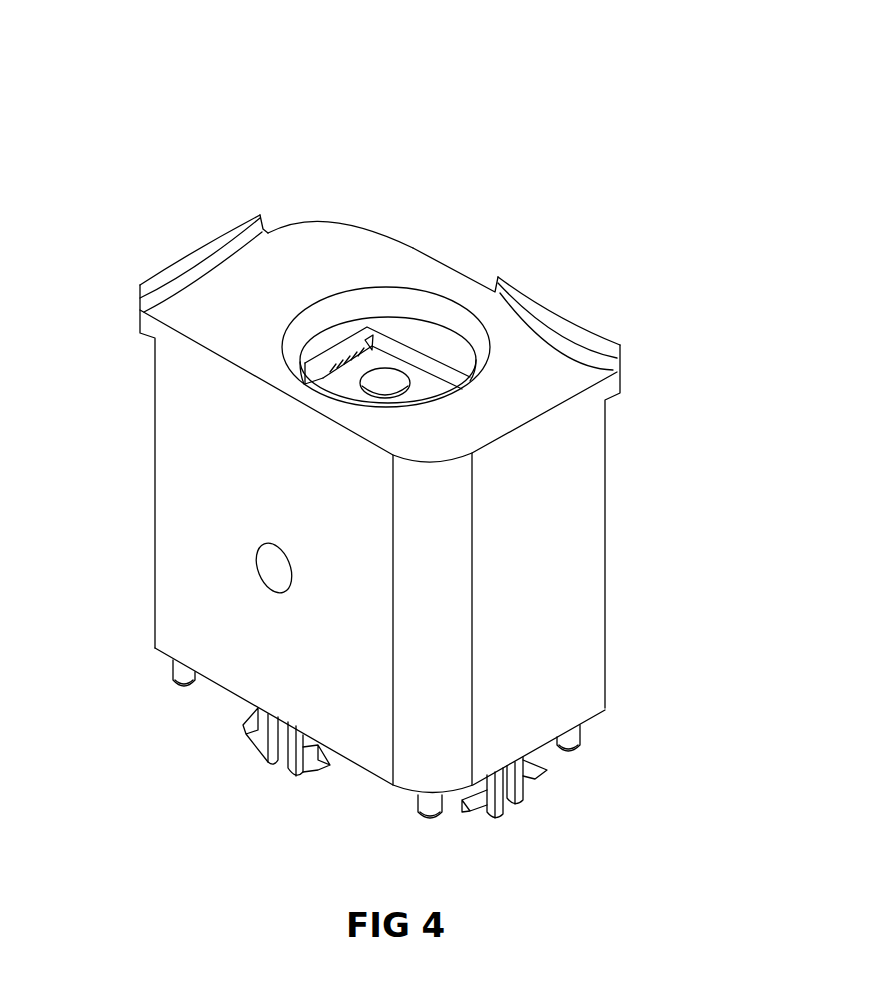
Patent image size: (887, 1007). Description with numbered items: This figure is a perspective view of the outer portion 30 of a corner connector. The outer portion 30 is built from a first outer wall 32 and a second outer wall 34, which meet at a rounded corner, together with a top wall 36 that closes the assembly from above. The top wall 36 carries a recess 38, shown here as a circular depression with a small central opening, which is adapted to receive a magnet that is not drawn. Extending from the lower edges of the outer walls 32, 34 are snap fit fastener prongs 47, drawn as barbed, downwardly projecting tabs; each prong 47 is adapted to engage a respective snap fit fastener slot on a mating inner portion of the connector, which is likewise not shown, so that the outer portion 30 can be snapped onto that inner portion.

The outer portion 30 is at (238, 172).
The first outer wall 32 is at (203, 465).
The second outer wall 34 is at (553, 576).
The top wall 36 is at (328, 250).
The recess 38 is at (407, 302).
The snap fit fastener prongs 47 is at (253, 747).